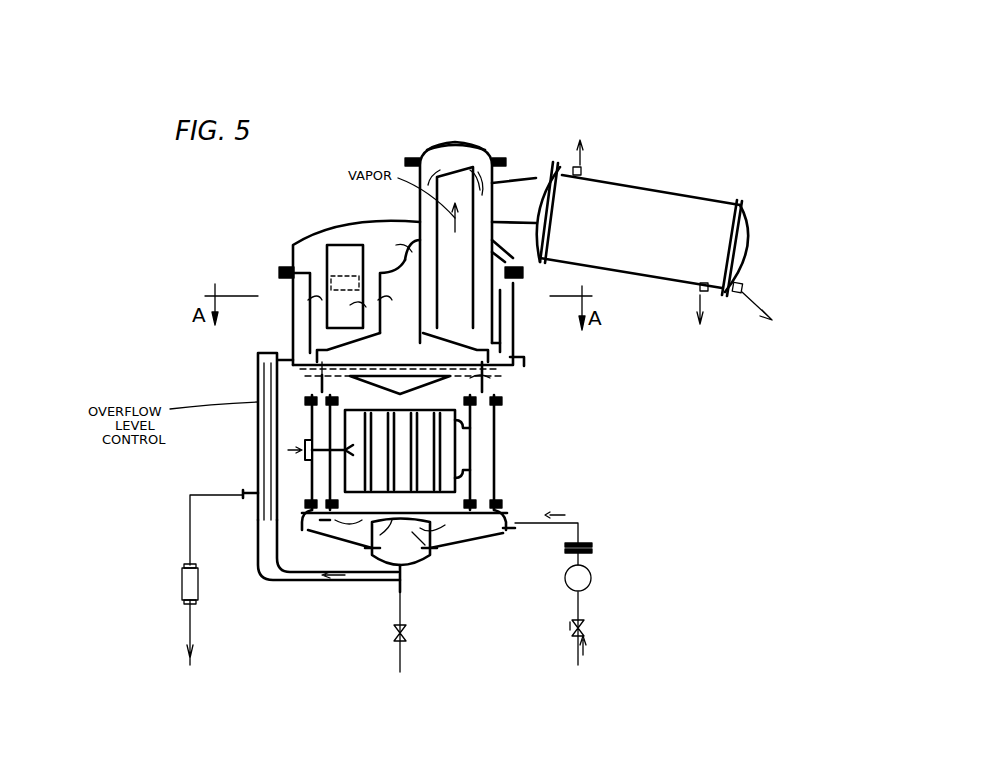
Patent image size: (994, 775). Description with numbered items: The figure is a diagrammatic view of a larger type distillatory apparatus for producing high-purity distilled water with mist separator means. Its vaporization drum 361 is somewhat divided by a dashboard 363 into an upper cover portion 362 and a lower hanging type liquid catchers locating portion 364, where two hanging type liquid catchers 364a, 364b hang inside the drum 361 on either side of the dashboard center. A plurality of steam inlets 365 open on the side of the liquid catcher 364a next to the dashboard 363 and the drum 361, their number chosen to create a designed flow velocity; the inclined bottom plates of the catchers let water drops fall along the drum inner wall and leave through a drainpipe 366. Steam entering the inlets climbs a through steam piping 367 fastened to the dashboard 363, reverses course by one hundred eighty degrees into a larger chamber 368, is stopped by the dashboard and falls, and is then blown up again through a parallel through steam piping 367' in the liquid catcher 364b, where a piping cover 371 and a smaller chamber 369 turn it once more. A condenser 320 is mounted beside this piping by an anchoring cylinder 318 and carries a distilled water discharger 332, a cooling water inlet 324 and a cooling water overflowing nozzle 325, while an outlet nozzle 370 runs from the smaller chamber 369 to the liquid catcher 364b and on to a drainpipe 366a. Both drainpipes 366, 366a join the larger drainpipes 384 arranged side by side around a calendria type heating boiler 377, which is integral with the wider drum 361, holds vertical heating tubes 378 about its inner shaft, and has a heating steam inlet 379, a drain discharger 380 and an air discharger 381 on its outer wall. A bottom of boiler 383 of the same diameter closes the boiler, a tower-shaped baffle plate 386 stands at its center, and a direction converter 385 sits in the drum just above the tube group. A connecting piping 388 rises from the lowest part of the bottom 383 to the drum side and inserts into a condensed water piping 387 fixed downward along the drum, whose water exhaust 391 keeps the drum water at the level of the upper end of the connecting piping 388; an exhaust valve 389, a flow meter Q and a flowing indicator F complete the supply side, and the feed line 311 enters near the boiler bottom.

The vaporization drum 361 is at (588, 356).
The cover portion 362 is at (340, 244).
The dashboard 363 is at (386, 280).
The hanging type liquid catchers locating portion 364 is at (402, 349).
The hanging type liquid catcher 364a is at (369, 354).
The hanging type liquid catcher 364b is at (500, 310).
The steam inlets 365 is at (300, 283).
The drainpipe 366 is at (300, 380).
The drainpipe 366a is at (492, 392).
The through steam piping 367 is at (339, 281).
The through steam piping 367' is at (459, 228).
The larger chamber 368 is at (383, 232).
The smaller chamber 369 is at (408, 162).
The outlet nozzle 370 is at (546, 268).
The piping cover 371 is at (442, 148).
The anchoring cylinder 318 is at (515, 215).
The condenser 320 is at (657, 190).
The cooling water inlet 324 is at (700, 290).
The cooling water overflowing nozzle 325 is at (582, 170).
The distilled water discharger 332 is at (748, 282).
The calendria type heating boiler 377 is at (462, 455).
The vertical heating tubes 378 is at (440, 445).
The heating steam inlet 379 is at (300, 440).
The drain discharger 380 is at (560, 468).
The air discharger 381 is at (530, 418).
The bottom of boiler 383 is at (315, 530).
The drainpipes 384 is at (502, 493).
The direction converter 385 is at (545, 384).
The baffle plate 386 is at (448, 550).
The condensed water piping 387 is at (266, 353).
The connecting piping 388 is at (282, 582).
The exhaust valve 389 is at (389, 643).
The water exhaust 391 is at (246, 492).
The supply inlet 311 is at (503, 536).